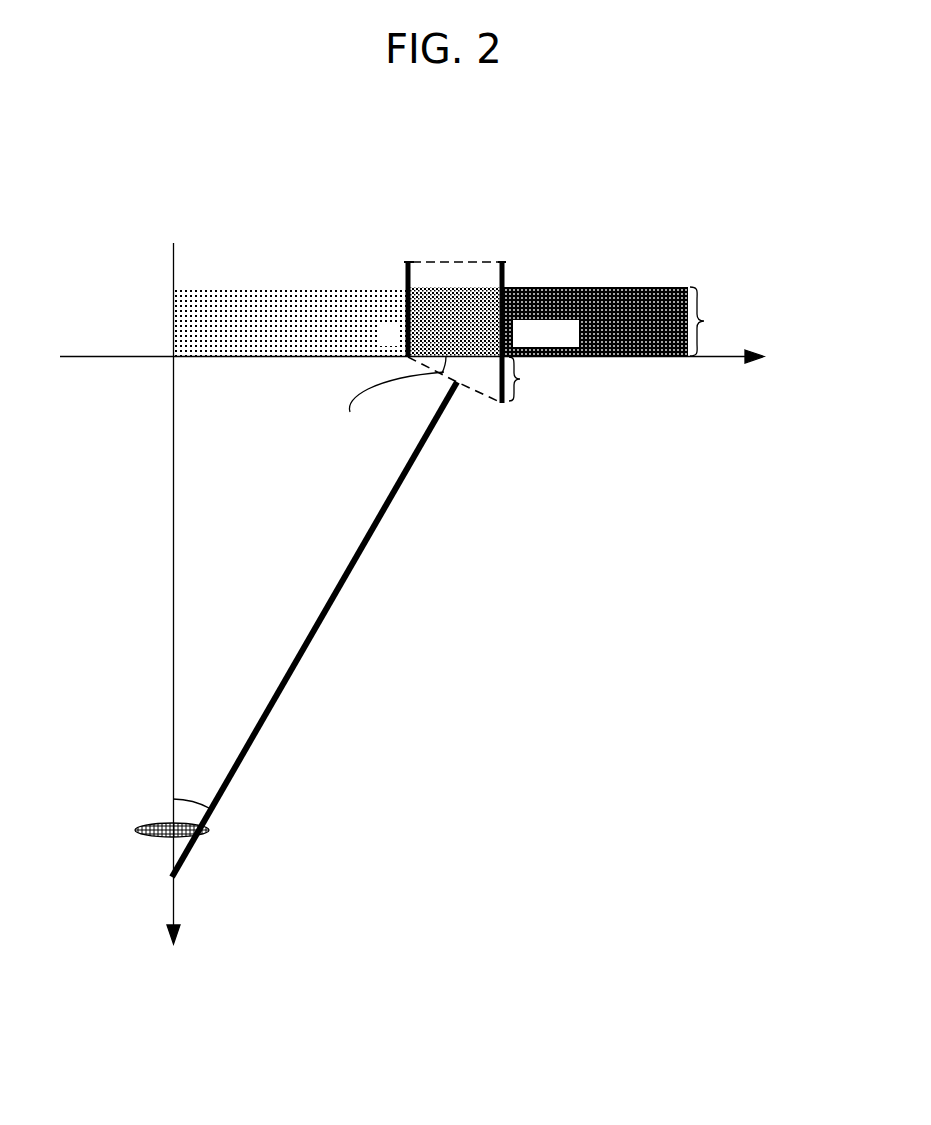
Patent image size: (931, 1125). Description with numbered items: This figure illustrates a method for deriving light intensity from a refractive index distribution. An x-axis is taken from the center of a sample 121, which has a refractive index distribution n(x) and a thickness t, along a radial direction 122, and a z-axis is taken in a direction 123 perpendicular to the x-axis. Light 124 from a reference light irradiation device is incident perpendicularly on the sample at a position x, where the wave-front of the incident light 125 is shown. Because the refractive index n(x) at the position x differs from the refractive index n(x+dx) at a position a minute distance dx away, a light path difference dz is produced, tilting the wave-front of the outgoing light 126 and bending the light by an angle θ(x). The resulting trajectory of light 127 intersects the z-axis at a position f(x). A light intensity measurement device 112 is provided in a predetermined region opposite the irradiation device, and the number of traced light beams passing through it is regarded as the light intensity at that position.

The light intensity measurement device 112 is at (200, 828).
The sample 121 is at (636, 348).
The radial direction 122 is at (131, 358).
The direction perpendicular to the x-axis 123 is at (175, 262).
The light 124 is at (405, 266).
The wave-front of incident light 125 is at (485, 260).
The wave-front of outgoing light 126 is at (478, 393).
The trajectory of light 127 is at (319, 622).